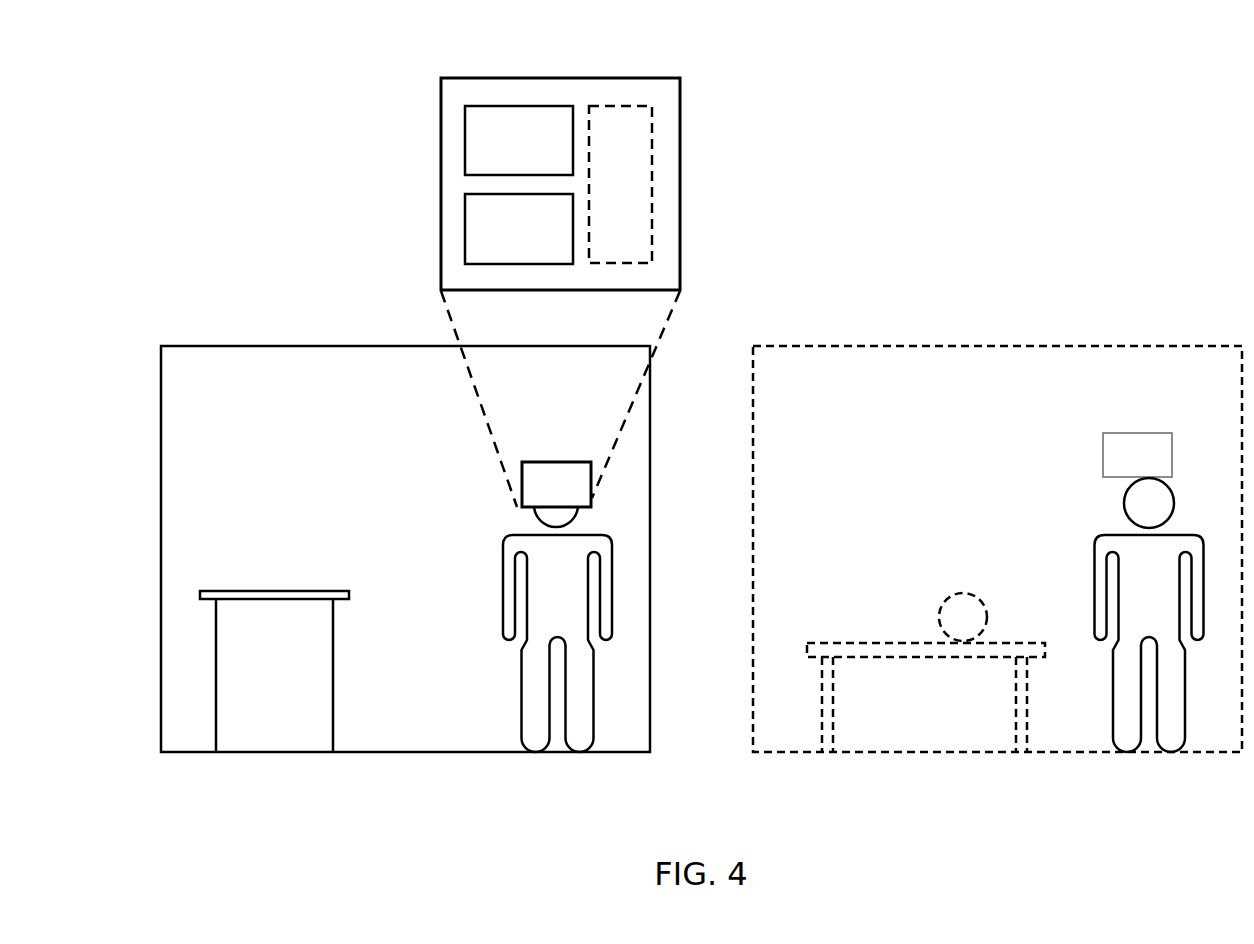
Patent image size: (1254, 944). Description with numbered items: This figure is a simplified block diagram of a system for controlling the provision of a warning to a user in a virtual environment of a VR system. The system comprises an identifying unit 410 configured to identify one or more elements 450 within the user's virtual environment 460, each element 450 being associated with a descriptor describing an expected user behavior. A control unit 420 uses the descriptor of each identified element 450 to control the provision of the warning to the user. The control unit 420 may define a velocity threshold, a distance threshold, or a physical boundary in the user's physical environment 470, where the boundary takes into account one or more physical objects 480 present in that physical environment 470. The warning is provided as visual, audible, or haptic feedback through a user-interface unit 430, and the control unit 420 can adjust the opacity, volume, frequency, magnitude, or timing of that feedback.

The identifying unit 410 is at (509, 101).
The control unit 420 is at (465, 236).
The user-interface unit 430 is at (652, 184).
The element 450 is at (960, 592).
The virtual environment 460 is at (1110, 346).
The physical environment 470 is at (234, 346).
The physical object 480 is at (236, 753).